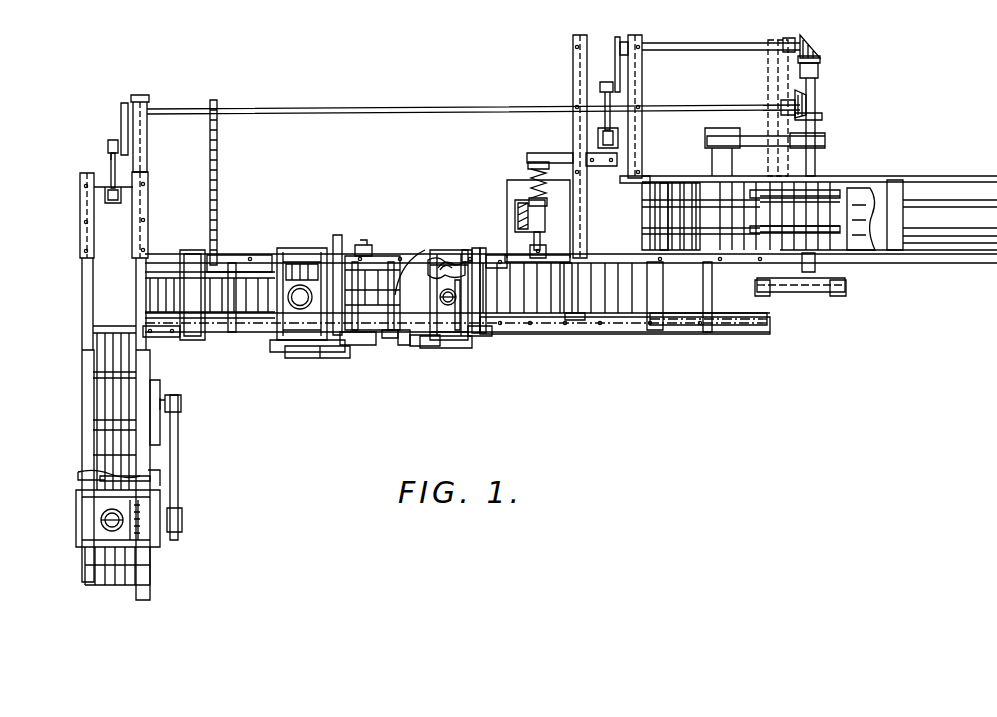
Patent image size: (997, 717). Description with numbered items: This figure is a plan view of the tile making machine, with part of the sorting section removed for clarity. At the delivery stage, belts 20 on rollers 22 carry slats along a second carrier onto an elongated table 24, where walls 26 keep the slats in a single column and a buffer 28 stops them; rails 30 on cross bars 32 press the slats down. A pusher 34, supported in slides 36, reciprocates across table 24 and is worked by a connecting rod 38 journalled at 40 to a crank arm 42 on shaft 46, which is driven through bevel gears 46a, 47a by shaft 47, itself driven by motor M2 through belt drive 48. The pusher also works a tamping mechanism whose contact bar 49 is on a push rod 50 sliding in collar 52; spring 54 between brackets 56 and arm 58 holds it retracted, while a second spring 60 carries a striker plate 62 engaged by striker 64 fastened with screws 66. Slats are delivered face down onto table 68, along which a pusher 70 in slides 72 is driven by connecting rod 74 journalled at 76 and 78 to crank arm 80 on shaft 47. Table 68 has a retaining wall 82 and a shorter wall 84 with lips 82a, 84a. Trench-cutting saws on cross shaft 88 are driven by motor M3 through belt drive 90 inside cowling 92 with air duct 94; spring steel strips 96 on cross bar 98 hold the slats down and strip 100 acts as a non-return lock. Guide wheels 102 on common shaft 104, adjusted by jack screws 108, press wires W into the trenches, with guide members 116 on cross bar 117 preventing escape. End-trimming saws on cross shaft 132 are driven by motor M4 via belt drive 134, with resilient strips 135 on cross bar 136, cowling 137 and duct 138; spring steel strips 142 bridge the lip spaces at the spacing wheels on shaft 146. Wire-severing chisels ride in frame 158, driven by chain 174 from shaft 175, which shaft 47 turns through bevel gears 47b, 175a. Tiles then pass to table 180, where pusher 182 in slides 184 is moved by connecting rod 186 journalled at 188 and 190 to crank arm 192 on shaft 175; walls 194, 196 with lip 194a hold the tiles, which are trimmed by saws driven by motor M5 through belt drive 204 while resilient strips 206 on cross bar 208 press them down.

The belts 20 is at (935, 240).
The rollers 22 is at (868, 250).
The elongated table 24 is at (890, 180).
The walls 26 is at (842, 176).
The buffer 28 is at (575, 190).
The rails 30 is at (764, 240).
The cross bars 32 is at (652, 250).
The pusher 34 is at (640, 212).
The slides 36 is at (642, 148).
The connecting rod 38 is at (603, 100).
The journal 40 is at (600, 132).
The crank arm 42 is at (615, 55).
The shaft 46 is at (620, 80).
The bevel gear 46a is at (818, 40).
The shaft 47 is at (816, 83).
The bevel gear 47a is at (822, 60).
The bevel gear 47b is at (822, 118).
The belt drive 48 is at (826, 142).
The contact bar 49 is at (570, 257).
The push rod 50 is at (546, 250).
The collar 52 is at (518, 205).
The spring 54 is at (545, 218).
The brackets 56 is at (548, 203).
The arm 58 is at (540, 238).
The second spring 60 is at (531, 183).
The striker plate 62 is at (528, 166).
The striker 64 is at (530, 153).
The screws 66 is at (600, 166).
The table 68 is at (575, 318).
The pusher 70 is at (655, 326).
The slides 72 is at (708, 332).
The connecting rod 74 is at (808, 294).
The journal 76 is at (762, 297).
The journal 78 is at (838, 297).
The crank arm 80 is at (840, 278).
The retaining wall 82 is at (558, 334).
The lip 82a is at (573, 334).
The shorter wall 84 is at (492, 250).
The lip 84a is at (486, 250).
The cross shaft 88 is at (447, 252).
The belt drive 90 is at (448, 350).
The cowling 92 is at (435, 253).
The air duct 94 is at (449, 306).
The spring steel strips 96 is at (468, 256).
The cross bar 98 is at (498, 254).
The strip 100 is at (488, 336).
The guide wheels 102 is at (372, 268).
The common shaft 104 is at (388, 340).
The jack screws 108 is at (360, 245).
The guide members 116 is at (372, 277).
The cross bar 117 is at (402, 346).
The cross shaft 132 is at (298, 258).
The belt drive 134 is at (320, 358).
The resilient strips 135 is at (322, 252).
The cross bar 136 is at (337, 234).
The cowling 137 is at (276, 342).
The duct 138 is at (298, 312).
The spring steel strips 142 is at (230, 285).
The shaft 146 is at (243, 255).
The frame 158 is at (188, 250).
The chain 174 is at (218, 162).
The shaft 175 is at (305, 112).
The bevel gear 175a is at (818, 103).
The table 180 is at (150, 337).
The pusher 182 is at (100, 218).
The slides 184 is at (133, 237).
The connecting rod 186 is at (111, 172).
The journal 188 is at (121, 196).
The journal 190 is at (110, 142).
The crank arm 192 is at (122, 124).
The wall 194 is at (150, 356).
The lip 194a is at (152, 374).
The wall 196 is at (83, 300).
The belt drive 204 is at (178, 461).
The resilient strips 206 is at (80, 473).
The cross bar 208 is at (150, 478).
The motor M2 is at (706, 138).
The motor M3 is at (428, 348).
The motor M4 is at (352, 346).
The motor M5 is at (181, 430).
The wires W is at (395, 272).